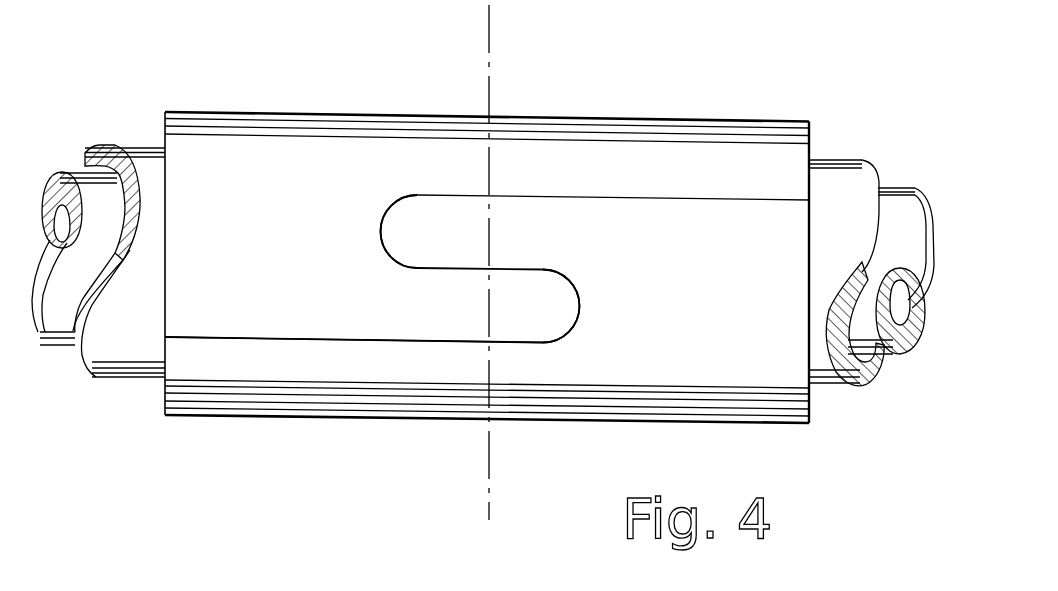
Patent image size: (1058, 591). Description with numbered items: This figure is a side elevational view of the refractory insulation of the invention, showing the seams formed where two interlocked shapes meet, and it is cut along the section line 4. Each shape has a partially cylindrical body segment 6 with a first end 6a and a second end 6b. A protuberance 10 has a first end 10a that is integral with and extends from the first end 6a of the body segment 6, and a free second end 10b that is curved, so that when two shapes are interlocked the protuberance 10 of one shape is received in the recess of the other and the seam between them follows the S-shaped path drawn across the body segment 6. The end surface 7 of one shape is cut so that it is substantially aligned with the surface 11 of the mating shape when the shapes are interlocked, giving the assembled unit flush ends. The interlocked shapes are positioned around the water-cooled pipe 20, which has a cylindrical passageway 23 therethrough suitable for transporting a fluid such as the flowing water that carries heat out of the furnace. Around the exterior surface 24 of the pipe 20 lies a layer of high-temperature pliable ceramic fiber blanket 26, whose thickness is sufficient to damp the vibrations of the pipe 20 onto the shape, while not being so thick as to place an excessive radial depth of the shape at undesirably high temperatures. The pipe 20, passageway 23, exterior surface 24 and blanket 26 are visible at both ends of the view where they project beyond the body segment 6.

The section line 4- 4 is at (489, 32).
The body segment 6 is at (433, 148).
The first end of the body segment 6a is at (237, 308).
The second end of the body segment 6b is at (710, 136).
The end surface 7 is at (812, 144).
The protuberance 10 is at (465, 305).
The first end of the protuberance 10a is at (383, 305).
The second end of the protuberance 10b is at (541, 313).
The surface 11 is at (165, 128).
The water-cooled pipe 20 is at (900, 362).
The cylindrical passageway 23 is at (62, 218).
The exterior surface 24 is at (57, 345).
The ceramic fiber blanket 26 is at (67, 175).